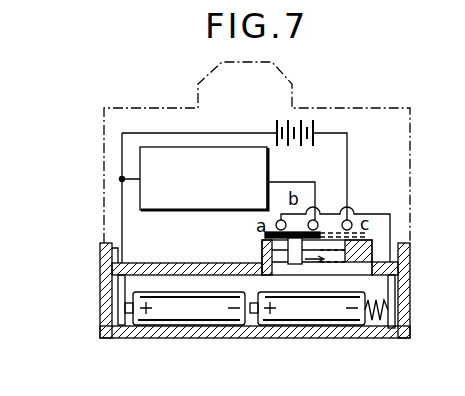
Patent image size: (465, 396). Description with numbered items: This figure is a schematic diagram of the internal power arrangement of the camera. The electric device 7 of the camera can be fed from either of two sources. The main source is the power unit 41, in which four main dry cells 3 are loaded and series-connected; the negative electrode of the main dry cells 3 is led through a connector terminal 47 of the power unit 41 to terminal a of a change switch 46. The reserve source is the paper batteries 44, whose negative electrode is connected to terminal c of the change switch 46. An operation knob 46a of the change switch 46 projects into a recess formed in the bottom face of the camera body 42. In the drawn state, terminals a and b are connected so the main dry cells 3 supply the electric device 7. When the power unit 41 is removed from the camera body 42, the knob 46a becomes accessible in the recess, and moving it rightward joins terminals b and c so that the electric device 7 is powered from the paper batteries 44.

The camera body 42 is at (102, 214).
The paper batteries 44 is at (308, 124).
The electric device 7 is at (270, 165).
The change switch 46 is at (263, 237).
The operation knob 46a is at (290, 262).
The power unit 41 is at (100, 300).
The main dry cells 3 is at (180, 330).
The connector terminal 47 is at (395, 300).